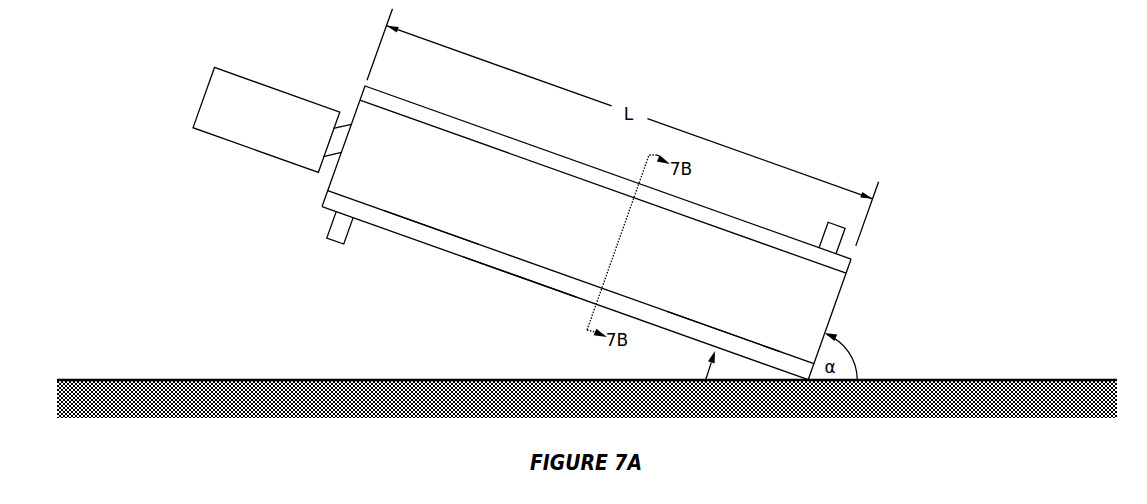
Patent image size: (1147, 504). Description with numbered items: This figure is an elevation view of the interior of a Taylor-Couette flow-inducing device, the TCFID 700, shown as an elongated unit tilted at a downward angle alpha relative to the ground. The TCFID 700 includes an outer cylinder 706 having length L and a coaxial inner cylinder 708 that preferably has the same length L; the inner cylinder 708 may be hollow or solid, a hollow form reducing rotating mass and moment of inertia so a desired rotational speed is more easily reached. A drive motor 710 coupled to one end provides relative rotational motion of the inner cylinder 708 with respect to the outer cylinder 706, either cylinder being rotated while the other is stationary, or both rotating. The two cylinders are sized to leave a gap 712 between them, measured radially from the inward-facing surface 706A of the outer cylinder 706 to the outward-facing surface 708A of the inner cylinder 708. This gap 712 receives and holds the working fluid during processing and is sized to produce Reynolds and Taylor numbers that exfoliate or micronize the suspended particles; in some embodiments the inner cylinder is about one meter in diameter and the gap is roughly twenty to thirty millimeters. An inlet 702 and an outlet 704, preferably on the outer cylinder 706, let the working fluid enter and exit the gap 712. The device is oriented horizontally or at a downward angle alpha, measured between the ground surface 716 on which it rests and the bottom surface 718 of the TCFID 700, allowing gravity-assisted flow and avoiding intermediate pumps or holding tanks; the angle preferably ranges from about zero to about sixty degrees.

The Taylor-Couette flow-inducing device (TCFID) 700 is at (240, 207).
The inlet 702 is at (329, 232).
The outlet 704 is at (825, 231).
The outer cylinder 706 is at (496, 270).
The inward-facing surface of the outer cylinder 706A is at (525, 266).
The inner cylinder 708 is at (397, 218).
The outward-facing surface of the inner cylinder 708A is at (430, 243).
The drive motor 710 is at (249, 80).
The gap 712 is at (725, 319).
The ground surface 716 is at (314, 370).
The bottom surface of the TCFID 718 is at (850, 265).